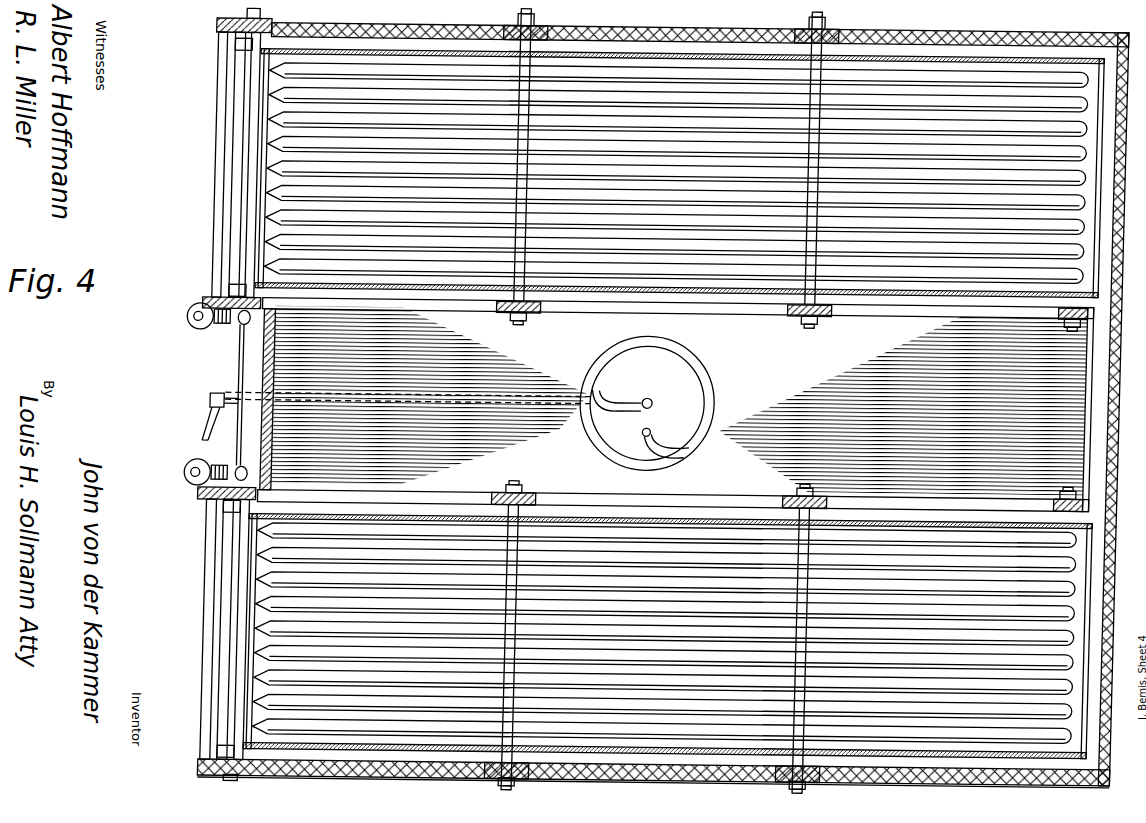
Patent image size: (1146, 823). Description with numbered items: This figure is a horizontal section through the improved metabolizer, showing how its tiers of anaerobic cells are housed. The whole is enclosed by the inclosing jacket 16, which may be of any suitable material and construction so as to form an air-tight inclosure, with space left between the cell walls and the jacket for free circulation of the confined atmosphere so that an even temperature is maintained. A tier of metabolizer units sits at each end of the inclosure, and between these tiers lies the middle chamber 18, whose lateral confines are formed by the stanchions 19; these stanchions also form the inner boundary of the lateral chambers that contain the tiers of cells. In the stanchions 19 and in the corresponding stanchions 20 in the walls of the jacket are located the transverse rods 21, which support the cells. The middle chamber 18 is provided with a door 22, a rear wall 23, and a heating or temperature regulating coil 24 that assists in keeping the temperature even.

The inclosing jacket 16 is at (667, 25).
The middle chamber 18 is at (645, 404).
The stanchions 19 is at (514, 310).
The stanchions 20 is at (511, 22).
The transverse rods 21 is at (529, 318).
The door 22 is at (275, 351).
The rear wall 23 is at (1095, 367).
The heating or temperature regulating coil 24 is at (600, 365).